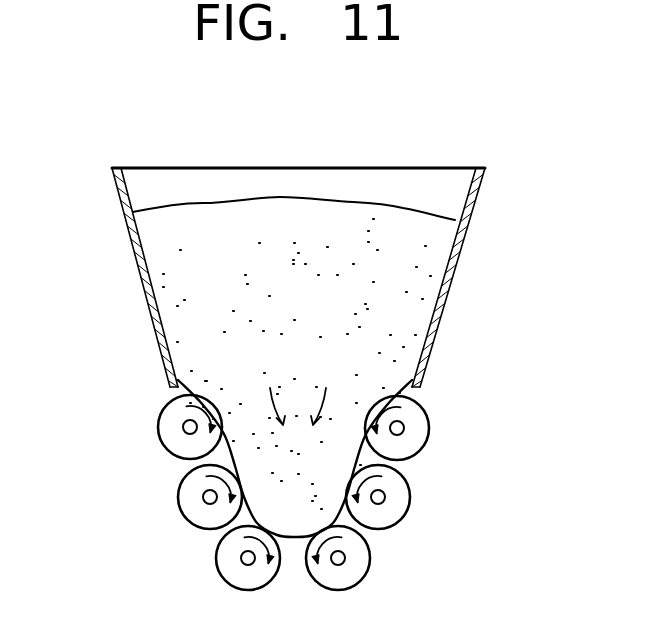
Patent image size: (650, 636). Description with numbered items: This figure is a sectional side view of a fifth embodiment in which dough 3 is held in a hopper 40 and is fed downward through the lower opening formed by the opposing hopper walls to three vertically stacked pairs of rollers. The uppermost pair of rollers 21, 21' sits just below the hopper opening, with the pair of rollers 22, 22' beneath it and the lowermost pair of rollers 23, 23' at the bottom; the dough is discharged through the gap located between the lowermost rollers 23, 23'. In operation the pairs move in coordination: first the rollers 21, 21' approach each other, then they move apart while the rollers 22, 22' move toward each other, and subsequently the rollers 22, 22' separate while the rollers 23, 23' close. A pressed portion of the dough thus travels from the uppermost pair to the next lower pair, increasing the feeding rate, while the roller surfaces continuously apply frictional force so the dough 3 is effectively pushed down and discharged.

The dough 3 is at (340, 199).
The hopper 40 is at (470, 227).
The roller 21 is at (441, 428).
The roller 21' is at (139, 427).
The roller 22 is at (425, 497).
The roller 22' is at (157, 497).
The roller 23 is at (390, 565).
The roller 23' is at (182, 562).